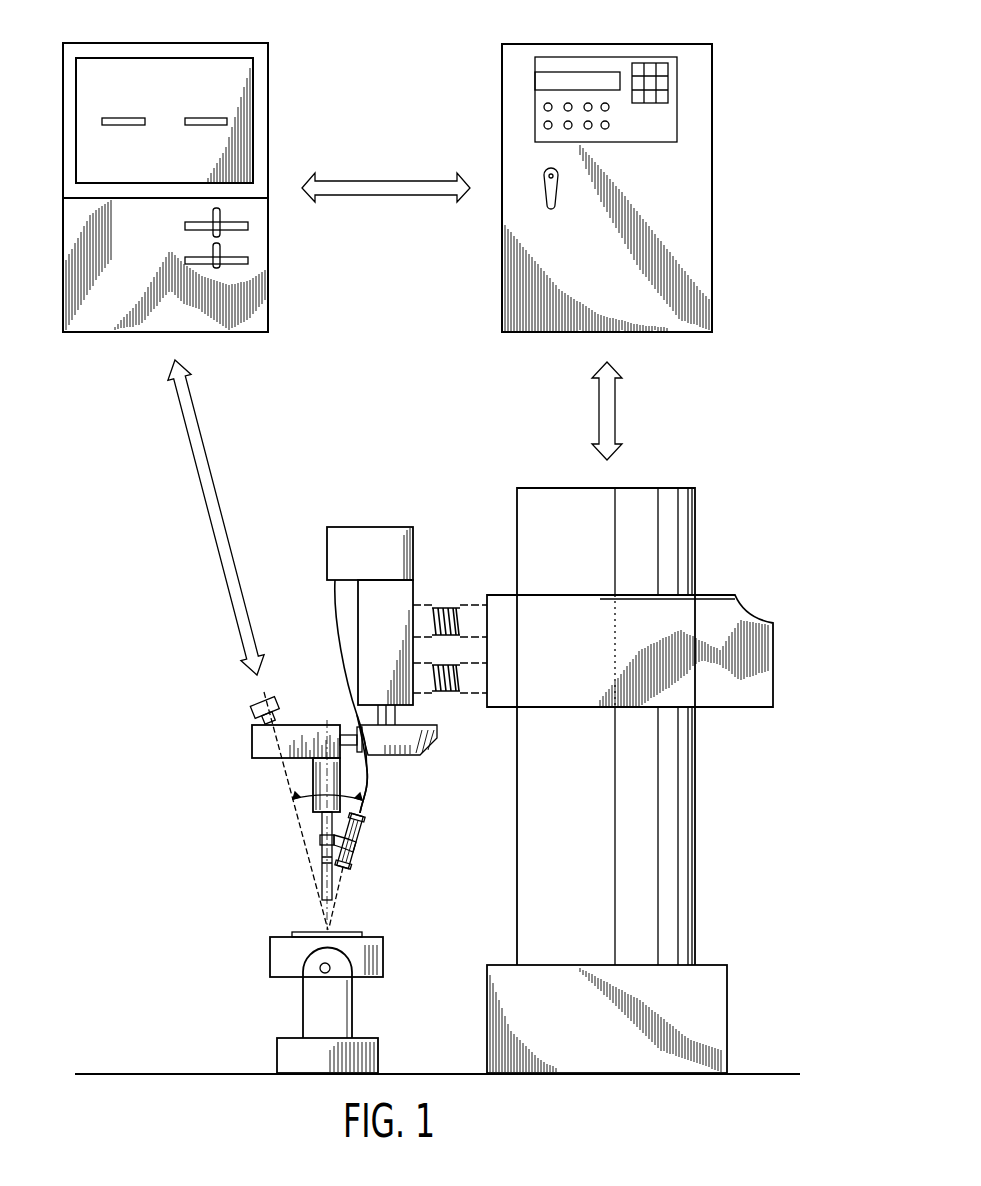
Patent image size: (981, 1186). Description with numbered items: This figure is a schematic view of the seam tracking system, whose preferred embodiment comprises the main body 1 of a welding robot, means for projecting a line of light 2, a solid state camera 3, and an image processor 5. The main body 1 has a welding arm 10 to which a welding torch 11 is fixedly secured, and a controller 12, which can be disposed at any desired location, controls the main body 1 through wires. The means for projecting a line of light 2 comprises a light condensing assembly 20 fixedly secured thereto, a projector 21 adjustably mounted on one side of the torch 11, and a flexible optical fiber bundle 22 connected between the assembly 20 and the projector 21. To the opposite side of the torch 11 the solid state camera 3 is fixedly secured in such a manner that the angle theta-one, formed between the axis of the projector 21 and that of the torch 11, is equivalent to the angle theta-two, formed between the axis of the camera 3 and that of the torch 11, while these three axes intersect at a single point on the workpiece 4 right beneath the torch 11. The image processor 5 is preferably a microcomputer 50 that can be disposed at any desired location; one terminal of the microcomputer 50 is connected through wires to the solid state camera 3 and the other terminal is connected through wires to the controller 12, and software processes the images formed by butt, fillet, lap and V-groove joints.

The main body 1 is at (525, 832).
The means for projecting a line of light 2 is at (333, 643).
The solid state camera 3 is at (275, 703).
The workpiece 4 is at (345, 931).
The image processor 5 is at (270, 287).
The welding arm 10 is at (257, 742).
The welding torch 11 is at (323, 888).
The controller 12 is at (530, 323).
The light condensing assembly 20 is at (367, 535).
The projector 21 is at (360, 830).
The flexible optical fiber bundle 22 is at (367, 770).
The microcomputer 50 is at (232, 65).